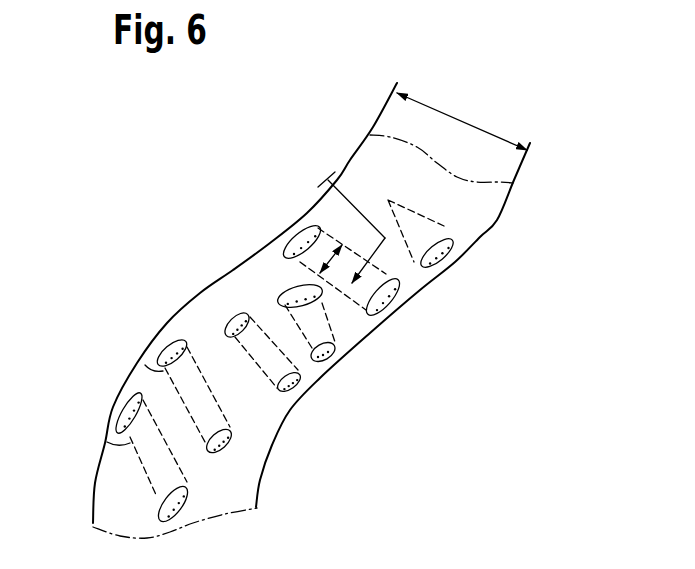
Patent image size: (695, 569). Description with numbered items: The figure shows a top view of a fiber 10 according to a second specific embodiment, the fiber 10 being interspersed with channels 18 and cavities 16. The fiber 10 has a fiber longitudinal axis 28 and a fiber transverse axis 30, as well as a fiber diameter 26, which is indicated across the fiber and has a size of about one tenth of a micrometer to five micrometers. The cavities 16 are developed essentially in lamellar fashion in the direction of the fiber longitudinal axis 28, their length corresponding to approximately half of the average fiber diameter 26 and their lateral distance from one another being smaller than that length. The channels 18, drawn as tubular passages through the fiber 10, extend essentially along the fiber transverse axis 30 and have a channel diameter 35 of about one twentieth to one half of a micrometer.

The fiber 10 is at (571, 173).
The cavities 16 is at (442, 222).
The channels 18 is at (143, 355).
The fiber diameter 26 is at (457, 118).
The fiber longitudinal axis 28 is at (378, 253).
The fiber transverse axis 30 is at (357, 208).
The channel diameter 35 is at (303, 227).